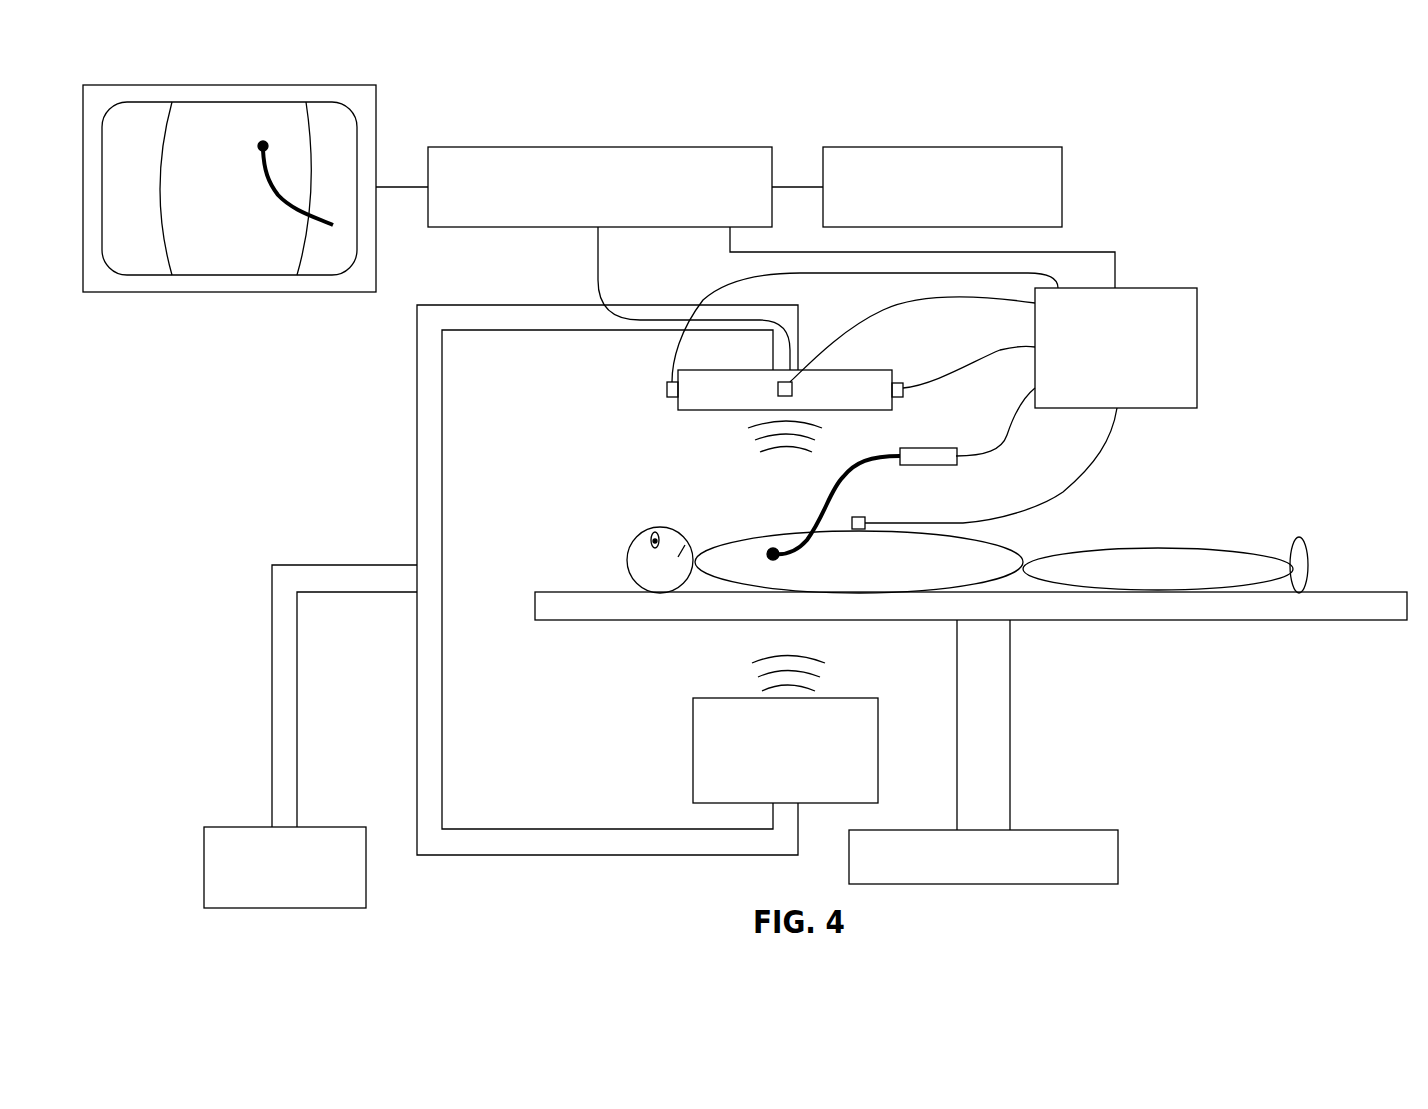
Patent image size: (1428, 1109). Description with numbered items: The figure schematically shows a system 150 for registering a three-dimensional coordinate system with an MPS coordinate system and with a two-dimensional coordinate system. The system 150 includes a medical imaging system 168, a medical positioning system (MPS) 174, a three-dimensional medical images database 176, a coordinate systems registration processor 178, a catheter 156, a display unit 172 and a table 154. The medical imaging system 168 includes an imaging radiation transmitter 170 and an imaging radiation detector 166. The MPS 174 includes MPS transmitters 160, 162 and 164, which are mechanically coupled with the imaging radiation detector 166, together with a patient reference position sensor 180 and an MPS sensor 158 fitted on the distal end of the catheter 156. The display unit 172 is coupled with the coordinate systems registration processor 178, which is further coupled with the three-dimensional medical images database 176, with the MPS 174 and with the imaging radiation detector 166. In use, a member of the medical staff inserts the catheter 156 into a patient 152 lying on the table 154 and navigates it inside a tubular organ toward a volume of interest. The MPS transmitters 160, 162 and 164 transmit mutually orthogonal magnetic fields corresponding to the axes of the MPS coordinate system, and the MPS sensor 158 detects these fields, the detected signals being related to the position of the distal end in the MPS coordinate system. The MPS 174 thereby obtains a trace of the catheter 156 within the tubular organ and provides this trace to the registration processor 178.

The system 150 is at (1230, 773).
The patient 152 is at (660, 527).
The table 154 is at (1390, 622).
The catheter 156 is at (270, 190).
The MPS sensor 158 is at (258, 148).
The MPS transmitter 160 is at (903, 398).
The MPS transmitter 162 is at (778, 390).
The MPS transmitter 164 is at (667, 390).
The imaging radiation detector 166 is at (867, 370).
The medical imaging system 168 is at (417, 490).
The imaging radiation transmitter 170 is at (693, 750).
The display unit 172 is at (377, 113).
The medical positioning system (MPS) 174 is at (1197, 348).
The 3D medical images database 176 is at (1062, 187).
The coordinate systems registration processor 178 is at (518, 227).
The patient reference position sensor 180 is at (860, 517).